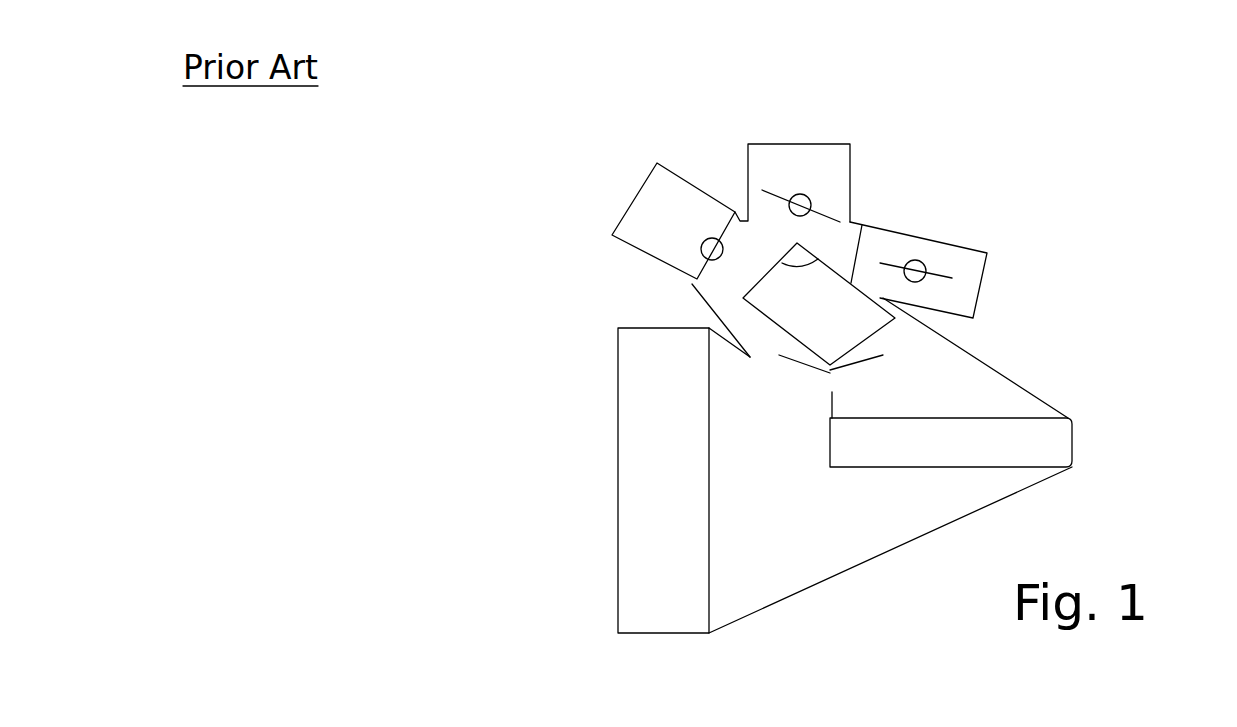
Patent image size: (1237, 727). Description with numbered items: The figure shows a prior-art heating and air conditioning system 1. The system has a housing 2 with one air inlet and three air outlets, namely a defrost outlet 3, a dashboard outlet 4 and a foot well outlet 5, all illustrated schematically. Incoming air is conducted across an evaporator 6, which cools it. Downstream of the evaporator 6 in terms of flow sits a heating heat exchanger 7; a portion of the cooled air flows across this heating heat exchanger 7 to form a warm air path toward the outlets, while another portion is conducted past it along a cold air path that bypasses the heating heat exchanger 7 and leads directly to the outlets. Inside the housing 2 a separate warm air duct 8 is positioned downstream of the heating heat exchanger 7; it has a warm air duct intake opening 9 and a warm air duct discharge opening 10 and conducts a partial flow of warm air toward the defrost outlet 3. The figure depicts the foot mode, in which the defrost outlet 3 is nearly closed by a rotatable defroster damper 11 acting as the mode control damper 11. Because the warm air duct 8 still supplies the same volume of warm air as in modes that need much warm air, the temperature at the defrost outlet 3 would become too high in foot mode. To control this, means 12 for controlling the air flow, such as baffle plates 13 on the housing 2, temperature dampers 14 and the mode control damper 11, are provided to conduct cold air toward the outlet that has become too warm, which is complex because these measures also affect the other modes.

The heating and air conditioning system 1 is at (410, 372).
The housing 2 is at (948, 335).
The defrost outlet 3 is at (700, 245).
The dashboard outlet 4 is at (799, 192).
The foot well outlet 5 is at (942, 262).
The evaporator 6 is at (653, 555).
The heating heat exchanger 7 is at (1022, 443).
The warm air duct 8 is at (853, 270).
The warm air duct intake opening 9 is at (962, 300).
The warm air duct discharge opening 10 is at (867, 220).
The defroster damper 11 is at (716, 237).
The means for controlling the air flow 12 is at (777, 355).
The baffle plates 13 is at (750, 357).
The temperature dampers 14 is at (883, 357).